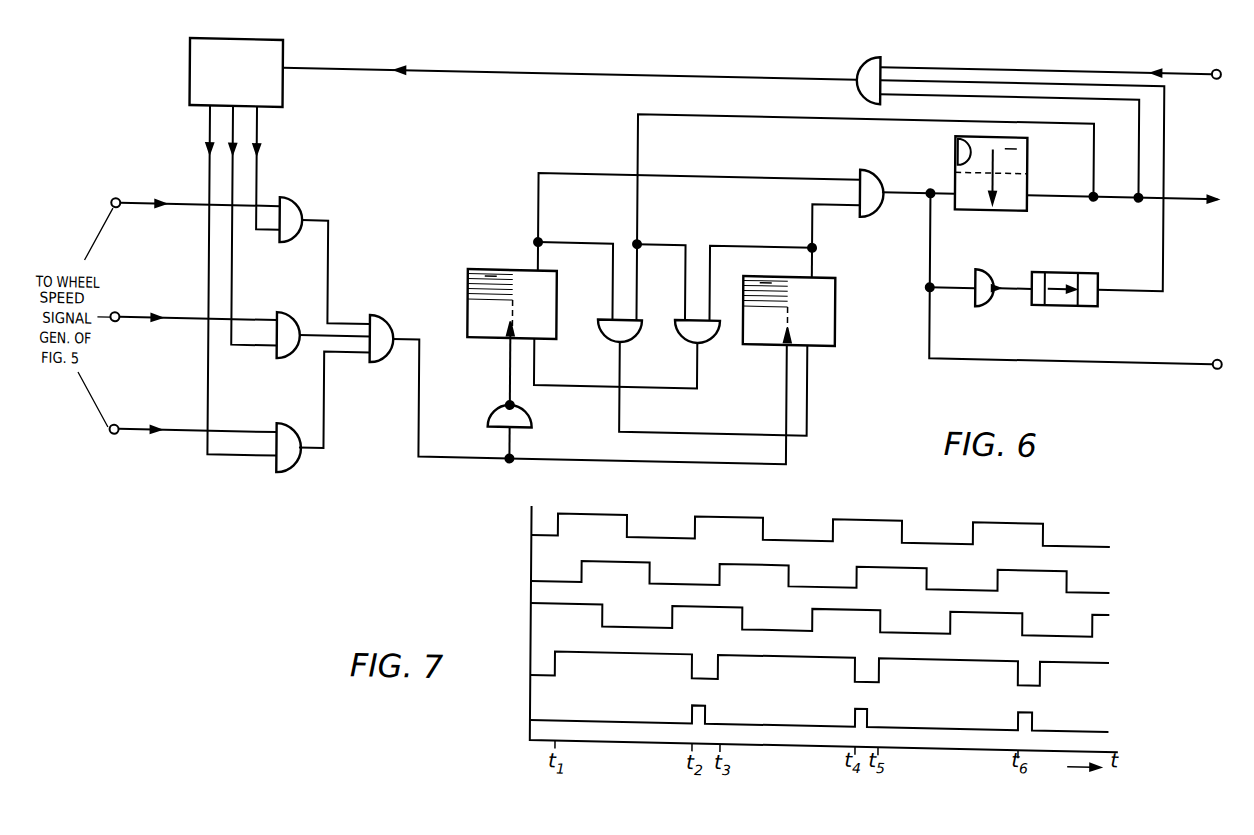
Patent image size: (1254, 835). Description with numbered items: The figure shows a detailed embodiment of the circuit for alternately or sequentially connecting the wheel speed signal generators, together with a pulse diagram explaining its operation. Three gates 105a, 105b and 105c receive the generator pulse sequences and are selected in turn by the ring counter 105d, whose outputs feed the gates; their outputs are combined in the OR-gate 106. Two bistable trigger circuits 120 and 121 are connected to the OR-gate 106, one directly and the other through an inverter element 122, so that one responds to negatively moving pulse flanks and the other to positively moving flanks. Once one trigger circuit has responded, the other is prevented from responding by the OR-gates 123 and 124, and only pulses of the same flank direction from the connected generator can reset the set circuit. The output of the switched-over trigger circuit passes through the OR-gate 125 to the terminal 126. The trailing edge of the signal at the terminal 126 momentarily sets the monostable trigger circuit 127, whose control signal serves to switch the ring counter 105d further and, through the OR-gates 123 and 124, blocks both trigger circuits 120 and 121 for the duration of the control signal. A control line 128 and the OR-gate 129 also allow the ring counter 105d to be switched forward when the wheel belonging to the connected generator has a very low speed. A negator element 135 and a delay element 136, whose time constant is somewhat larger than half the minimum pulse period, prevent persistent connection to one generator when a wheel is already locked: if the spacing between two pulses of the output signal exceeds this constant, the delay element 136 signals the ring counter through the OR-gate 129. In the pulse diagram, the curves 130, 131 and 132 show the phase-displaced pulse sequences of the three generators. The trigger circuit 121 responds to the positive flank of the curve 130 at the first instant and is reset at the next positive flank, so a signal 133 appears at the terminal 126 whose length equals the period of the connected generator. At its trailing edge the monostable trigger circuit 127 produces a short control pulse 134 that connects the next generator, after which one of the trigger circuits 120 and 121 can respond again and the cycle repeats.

In FIG. 6, the gate 105a is at (306, 199).
In FIG. 6, the gate 105b is at (300, 310).
In FIG. 6, the gate 105c is at (300, 422).
In FIG. 6, the ring counter 105d is at (275, 100).
In FIG. 6, the OR-gate 106 is at (390, 311).
In FIG. 6, the bistable trigger circuit 120 is at (487, 330).
In FIG. 6, the bistable trigger circuit 121 is at (825, 333).
In FIG. 6, the inverter element 122 is at (497, 420).
In FIG. 6, the OR-gate 123 is at (633, 343).
In FIG. 6, the OR-gate 124 is at (712, 342).
In FIG. 6, the OR-gate 125 is at (872, 166).
In FIG. 6, the terminal 126 is at (1215, 360).
In FIG. 6, the monostable trigger circuit 127 is at (1026, 147).
In FIG. 6, the control line 128 is at (1197, 66).
In FIG. 6, the OR-gate 129 is at (853, 88).
In FIG. 6, the negator element 135 is at (985, 298).
In FIG. 6, the delay element 136 is at (1069, 291).
In FIG. 7, the curve of pulse sequence 130 is at (800, 531).
In FIG. 7, the curve of pulse sequence 131 is at (799, 575).
In FIG. 7, the curve of pulse sequence 132 is at (799, 619).
In FIG. 7, the signal 133 is at (799, 668).
In FIG. 7, the control pulse 134 is at (798, 713).